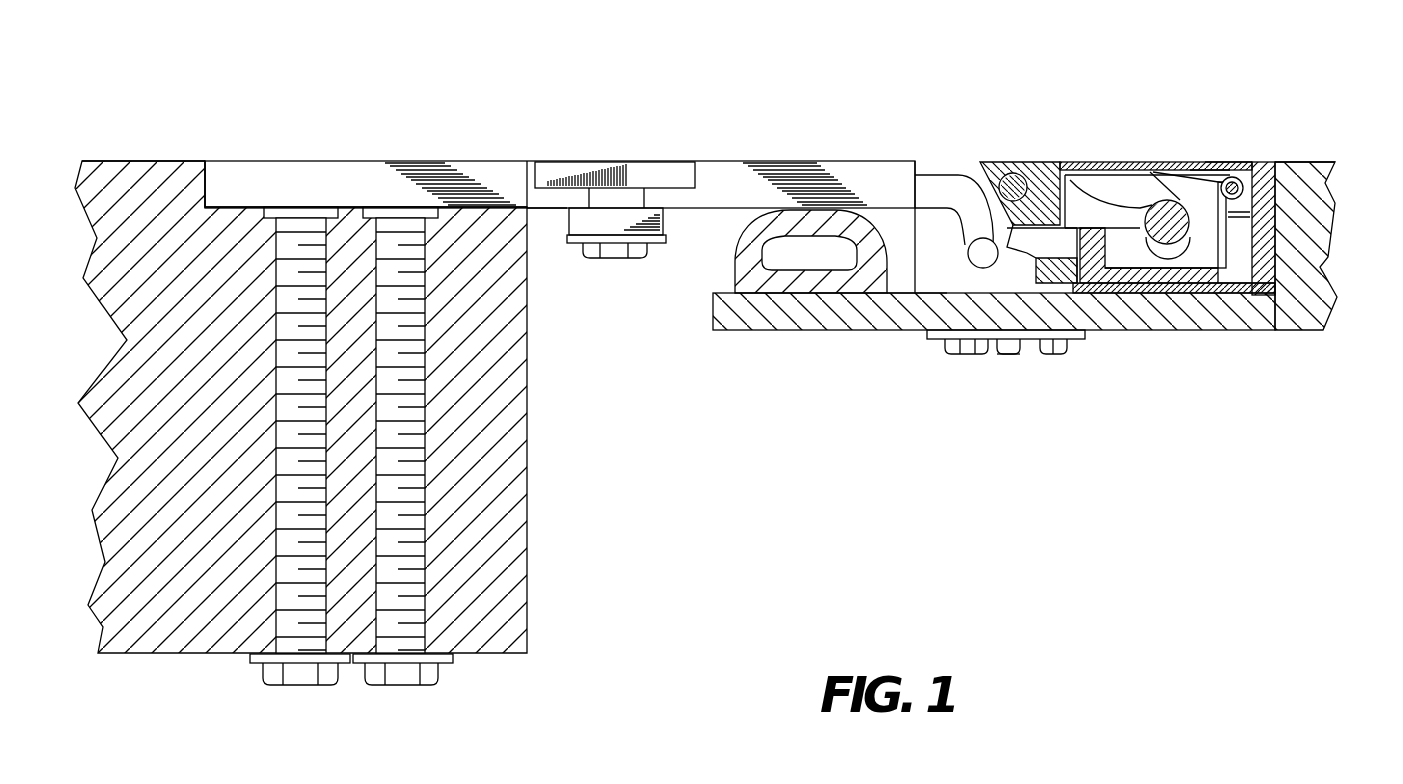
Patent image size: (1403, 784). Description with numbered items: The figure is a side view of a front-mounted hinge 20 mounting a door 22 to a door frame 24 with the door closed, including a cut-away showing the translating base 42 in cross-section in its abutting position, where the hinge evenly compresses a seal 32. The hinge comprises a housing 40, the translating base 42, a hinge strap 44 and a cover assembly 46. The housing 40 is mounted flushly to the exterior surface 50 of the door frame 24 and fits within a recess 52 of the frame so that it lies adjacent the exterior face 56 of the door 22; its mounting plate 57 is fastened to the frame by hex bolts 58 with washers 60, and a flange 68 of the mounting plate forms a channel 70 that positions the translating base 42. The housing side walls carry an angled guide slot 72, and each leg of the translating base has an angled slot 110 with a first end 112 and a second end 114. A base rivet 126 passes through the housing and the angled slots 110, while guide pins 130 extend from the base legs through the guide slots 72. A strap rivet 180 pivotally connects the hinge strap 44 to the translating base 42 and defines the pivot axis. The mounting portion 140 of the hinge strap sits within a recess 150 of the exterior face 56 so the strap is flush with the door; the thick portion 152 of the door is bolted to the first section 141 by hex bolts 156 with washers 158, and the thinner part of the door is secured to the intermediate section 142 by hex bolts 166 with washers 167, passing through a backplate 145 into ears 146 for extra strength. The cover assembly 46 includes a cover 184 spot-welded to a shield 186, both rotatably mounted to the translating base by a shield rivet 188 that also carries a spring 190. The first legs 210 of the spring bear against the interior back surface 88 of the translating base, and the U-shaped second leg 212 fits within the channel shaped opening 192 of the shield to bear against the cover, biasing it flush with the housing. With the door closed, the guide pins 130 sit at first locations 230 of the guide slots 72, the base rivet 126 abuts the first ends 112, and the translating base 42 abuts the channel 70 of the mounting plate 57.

The front-mounted hinge 20 is at (840, 124).
The door 22 is at (120, 187).
The door frame 24 is at (922, 337).
The seal 32 is at (740, 252).
The housing 40 is at (935, 275).
The translating base 42 is at (1327, 266).
The hinge strap 44 is at (505, 195).
The cover assembly 46 is at (1215, 163).
The exterior surface 50 is at (1300, 166).
The recess 52 is at (902, 275).
The exterior face 56 is at (145, 178).
The mounting plate 57 is at (1158, 296).
The hex bolts 58 is at (1043, 357).
The washers 60 is at (1090, 290).
The flange 68 is at (1085, 333).
The channel 70 is at (1170, 290).
The angled guide slot 72 is at (966, 185).
The interior back surface 88 is at (1258, 220).
The angled slot 110 is at (1265, 300).
The first end 112 is at (1062, 164).
The second end 114 is at (1225, 292).
The base rivet 126 is at (1203, 151).
The guide pin 130 is at (985, 258).
The mounting portion 140 is at (715, 168).
The first section 141 is at (298, 165).
The intermediate section 142 is at (737, 165).
The backplate 145 is at (617, 225).
The ears 146 is at (660, 165).
The recess 150 is at (234, 193).
The thick portion 152 is at (490, 215).
The hex bolts 156 is at (300, 688).
The washers 158 is at (455, 655).
The hex bolts 166 is at (647, 258).
The washers 167 is at (570, 245).
The strap rivet 180 is at (1010, 175).
The cover 184 is at (1122, 165).
The shield 186 is at (1095, 165).
The shield rivet 188 is at (1258, 180).
The spring 190 is at (1243, 176).
The channel shaped opening 192 is at (1153, 166).
The first legs 210 is at (1245, 190).
The second leg 212 is at (1165, 200).
The first locations 230 is at (984, 262).